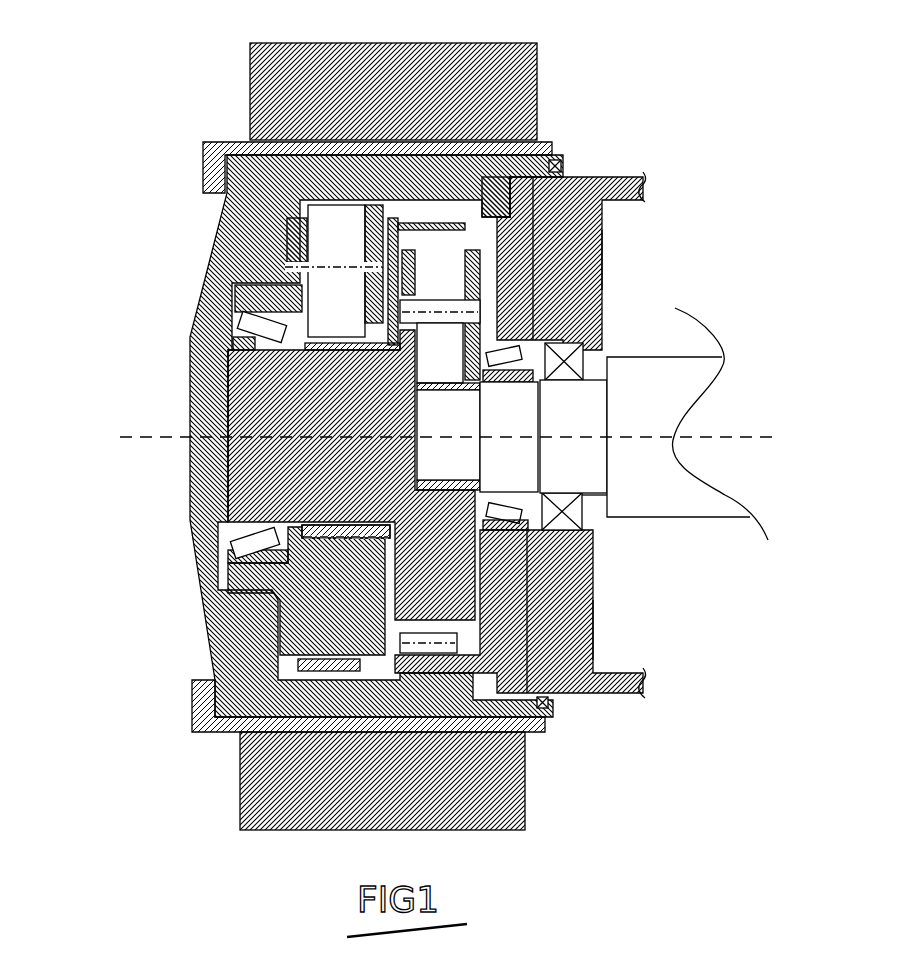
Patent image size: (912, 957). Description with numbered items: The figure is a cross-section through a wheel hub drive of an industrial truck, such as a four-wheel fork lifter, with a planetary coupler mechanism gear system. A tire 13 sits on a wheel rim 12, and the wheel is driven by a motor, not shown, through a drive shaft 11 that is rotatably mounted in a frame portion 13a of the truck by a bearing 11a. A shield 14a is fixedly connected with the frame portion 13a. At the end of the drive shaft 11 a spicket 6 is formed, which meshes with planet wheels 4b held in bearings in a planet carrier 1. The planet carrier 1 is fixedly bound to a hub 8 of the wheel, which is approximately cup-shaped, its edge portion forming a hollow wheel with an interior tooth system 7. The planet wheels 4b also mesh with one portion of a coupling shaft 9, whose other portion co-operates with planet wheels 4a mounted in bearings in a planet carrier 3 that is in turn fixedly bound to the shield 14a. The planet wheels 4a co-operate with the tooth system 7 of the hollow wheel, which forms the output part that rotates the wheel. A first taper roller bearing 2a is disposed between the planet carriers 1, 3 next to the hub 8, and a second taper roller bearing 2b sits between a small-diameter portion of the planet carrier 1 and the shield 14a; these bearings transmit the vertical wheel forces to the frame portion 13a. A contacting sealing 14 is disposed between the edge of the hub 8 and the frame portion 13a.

The planet carrier 1 is at (272, 452).
The first taper roller bearing 2a is at (247, 543).
The second taper roller bearing 2b is at (505, 513).
The planet carrier 3 is at (327, 585).
The planet wheels 4a is at (324, 237).
The planet wheels 4b is at (432, 359).
The spicket 6 is at (472, 392).
The interior tooth system 7 is at (320, 665).
The hub 8 is at (208, 403).
The coupling shaft 9 is at (437, 640).
The drive shaft 11 is at (680, 382).
The bearing 11a is at (582, 510).
The wheel rim 12 is at (523, 146).
The tire 13 is at (523, 93).
The frame portion 13a is at (601, 263).
The contacting sealing 14 is at (557, 168).
The shield 14a is at (582, 595).